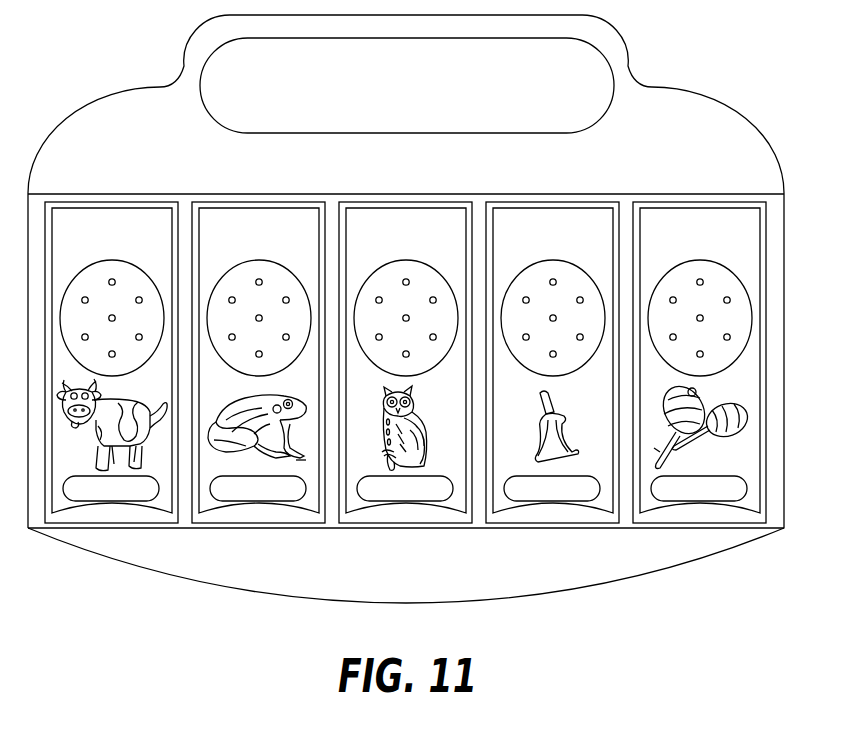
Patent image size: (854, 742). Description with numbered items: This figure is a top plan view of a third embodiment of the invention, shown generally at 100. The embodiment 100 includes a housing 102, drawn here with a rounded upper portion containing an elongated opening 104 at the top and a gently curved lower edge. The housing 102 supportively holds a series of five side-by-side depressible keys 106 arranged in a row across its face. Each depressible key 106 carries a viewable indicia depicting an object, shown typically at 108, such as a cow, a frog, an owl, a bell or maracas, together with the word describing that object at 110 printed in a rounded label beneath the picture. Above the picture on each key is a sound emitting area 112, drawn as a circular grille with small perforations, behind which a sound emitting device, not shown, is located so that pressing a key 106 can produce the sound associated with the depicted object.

The third embodiment 100 is at (406, 333).
The housing 102 is at (566, 592).
The handle opening 104 is at (300, 39).
The depressible keys 106 is at (356, 505).
The viewable indicia depicting an object 108 is at (381, 432).
The word describing the object 110 is at (437, 492).
The sound emitting area 112 is at (418, 298).